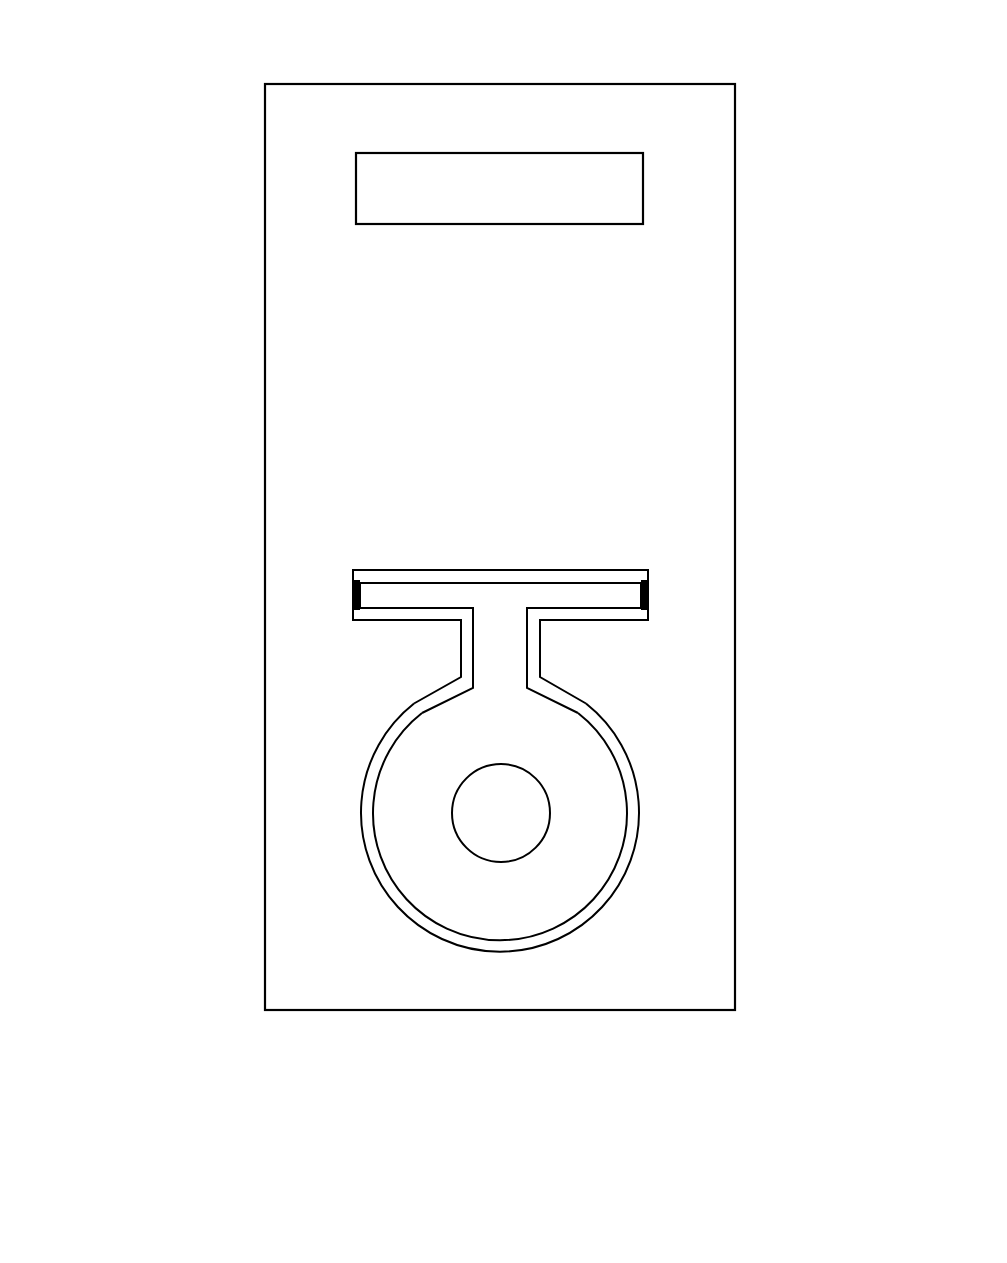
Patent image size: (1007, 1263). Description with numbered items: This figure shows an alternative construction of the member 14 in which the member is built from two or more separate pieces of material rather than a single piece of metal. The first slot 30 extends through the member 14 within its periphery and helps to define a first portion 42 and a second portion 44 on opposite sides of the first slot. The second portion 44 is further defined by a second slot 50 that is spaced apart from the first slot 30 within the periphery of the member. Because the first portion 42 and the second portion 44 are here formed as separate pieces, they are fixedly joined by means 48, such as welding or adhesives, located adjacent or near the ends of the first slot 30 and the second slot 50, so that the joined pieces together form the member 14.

The member 14 is at (138, 185).
The first portion 42 is at (637, 447).
The first slot 30 is at (522, 577).
The means 48 is at (353, 598).
The second slot 50 is at (632, 782).
The second portion 44 is at (597, 833).